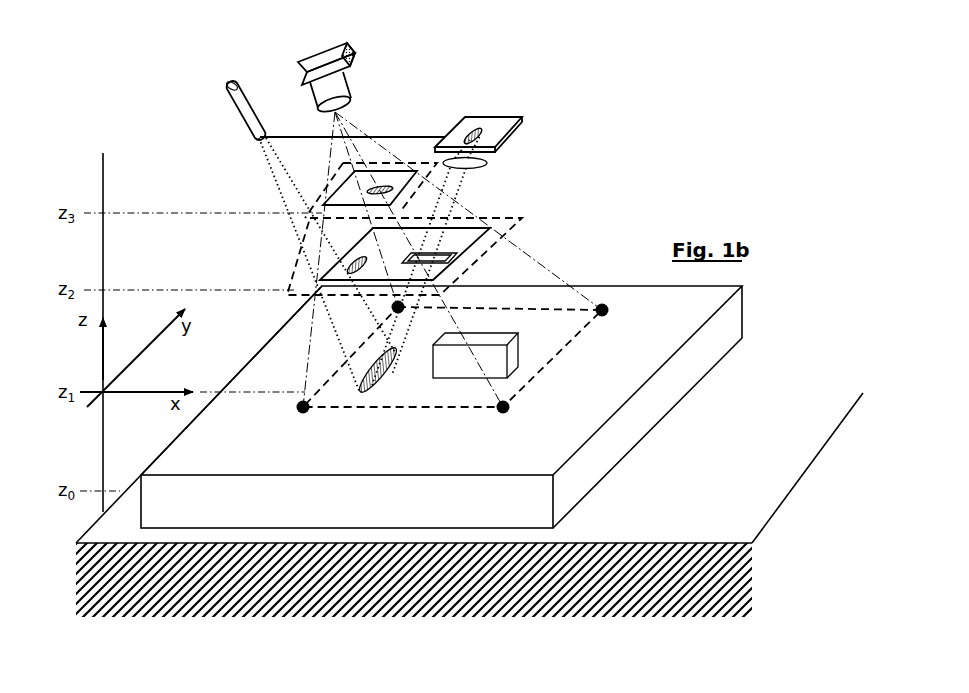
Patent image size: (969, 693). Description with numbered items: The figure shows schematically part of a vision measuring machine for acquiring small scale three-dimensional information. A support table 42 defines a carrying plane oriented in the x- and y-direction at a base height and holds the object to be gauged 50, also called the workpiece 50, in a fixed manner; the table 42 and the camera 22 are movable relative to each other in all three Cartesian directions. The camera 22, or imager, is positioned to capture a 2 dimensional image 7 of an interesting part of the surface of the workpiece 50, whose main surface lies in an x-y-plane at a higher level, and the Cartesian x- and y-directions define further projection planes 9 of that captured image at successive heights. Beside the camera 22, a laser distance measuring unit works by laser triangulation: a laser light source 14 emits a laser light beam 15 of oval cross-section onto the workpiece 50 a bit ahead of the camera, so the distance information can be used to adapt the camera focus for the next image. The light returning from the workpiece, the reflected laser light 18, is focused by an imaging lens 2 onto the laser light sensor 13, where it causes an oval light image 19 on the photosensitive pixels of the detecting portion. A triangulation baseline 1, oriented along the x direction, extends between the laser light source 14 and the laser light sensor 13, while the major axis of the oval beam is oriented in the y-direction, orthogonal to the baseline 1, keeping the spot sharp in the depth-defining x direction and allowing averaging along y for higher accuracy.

The triangulation baseline 1 is at (297, 135).
The imaging lens 2 is at (488, 164).
The 2 dimensional image 7 is at (384, 187).
The projection planes 9 is at (323, 207).
The laser light sensor 13 is at (533, 115).
The laser light source 14 is at (217, 102).
The laser light beam 15 is at (267, 157).
The reflected laser light 18 is at (463, 182).
The light image 19 is at (478, 130).
The camera 22 is at (283, 60).
The support table 42 is at (412, 600).
The object to be gauged 50 is at (386, 447).